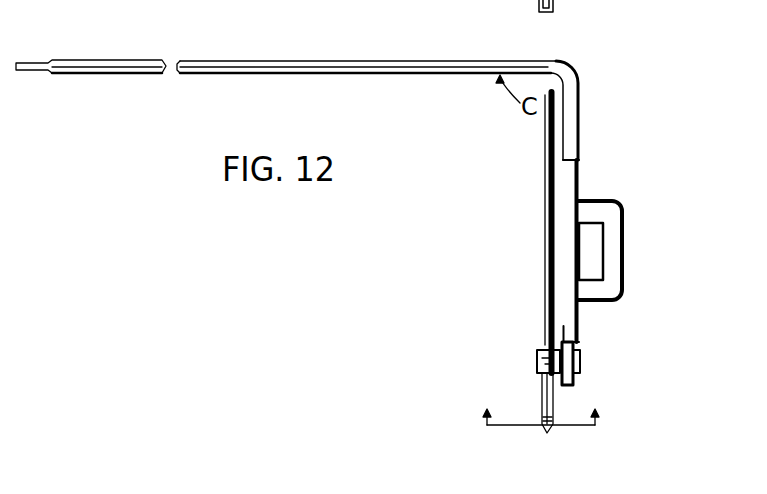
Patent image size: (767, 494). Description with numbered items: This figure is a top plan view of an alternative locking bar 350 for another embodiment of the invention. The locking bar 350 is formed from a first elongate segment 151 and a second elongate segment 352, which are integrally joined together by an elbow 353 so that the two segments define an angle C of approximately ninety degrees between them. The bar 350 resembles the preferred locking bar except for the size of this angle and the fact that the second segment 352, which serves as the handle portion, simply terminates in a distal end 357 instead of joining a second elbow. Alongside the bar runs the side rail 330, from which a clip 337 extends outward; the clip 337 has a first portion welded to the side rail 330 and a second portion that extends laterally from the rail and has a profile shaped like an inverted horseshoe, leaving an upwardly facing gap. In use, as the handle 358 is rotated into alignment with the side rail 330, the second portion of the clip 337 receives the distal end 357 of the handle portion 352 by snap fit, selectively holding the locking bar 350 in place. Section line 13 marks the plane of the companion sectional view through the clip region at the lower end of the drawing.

The locking bar 350 is at (220, 60).
The first elongate segment 151 is at (270, 77).
The elbow 353 is at (573, 70).
The second elongate segment 352 is at (578, 145).
The handle 358 is at (622, 248).
The side rail 330 is at (545, 247).
The clip 337 is at (579, 365).
The distal end 357 is at (576, 381).
The section line 13- 13 is at (543, 408).